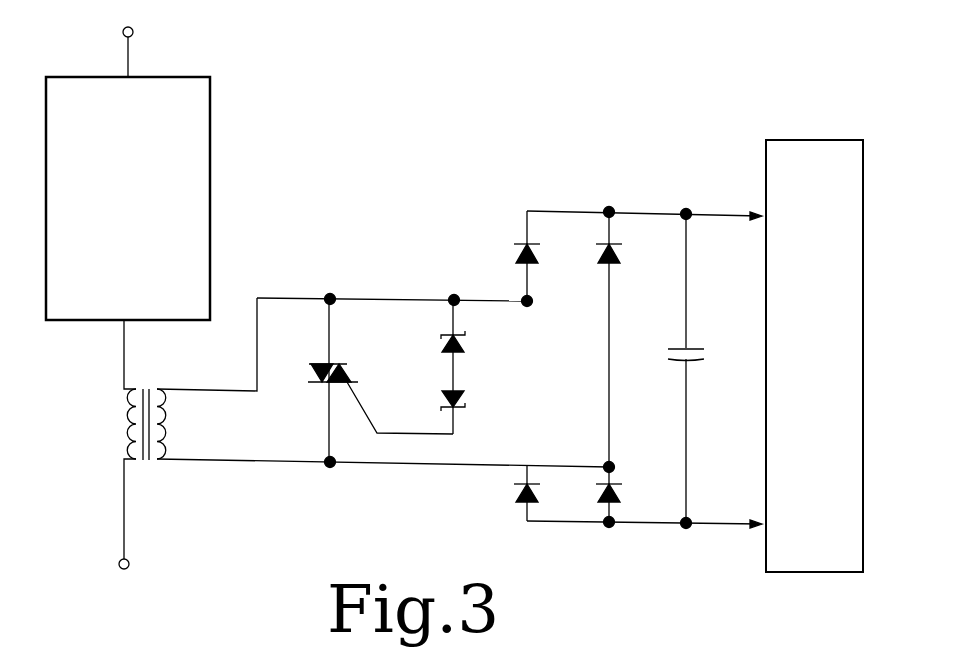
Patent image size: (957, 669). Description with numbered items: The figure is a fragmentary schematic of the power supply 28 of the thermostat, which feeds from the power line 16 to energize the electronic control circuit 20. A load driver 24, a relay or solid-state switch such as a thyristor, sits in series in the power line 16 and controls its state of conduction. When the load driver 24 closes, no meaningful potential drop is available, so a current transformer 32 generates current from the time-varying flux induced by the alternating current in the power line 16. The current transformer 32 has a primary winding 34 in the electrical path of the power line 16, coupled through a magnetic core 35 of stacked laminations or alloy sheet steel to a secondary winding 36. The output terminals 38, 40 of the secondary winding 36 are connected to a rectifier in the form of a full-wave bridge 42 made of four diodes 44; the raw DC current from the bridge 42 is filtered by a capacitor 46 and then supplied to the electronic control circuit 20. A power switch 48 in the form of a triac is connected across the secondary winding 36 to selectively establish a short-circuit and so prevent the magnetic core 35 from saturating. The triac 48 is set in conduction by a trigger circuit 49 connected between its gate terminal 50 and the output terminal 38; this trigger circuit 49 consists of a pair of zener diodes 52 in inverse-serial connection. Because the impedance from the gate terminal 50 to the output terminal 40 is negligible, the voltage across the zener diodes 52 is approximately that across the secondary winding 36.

The power line 16 is at (121, 343).
The electronic control circuit 20 is at (814, 356).
The load driver 24 is at (204, 78).
The power supply 28 is at (444, 162).
The current transformer 32 is at (150, 447).
The primary winding 34 is at (132, 437).
The magnetic core 35 is at (147, 389).
The secondary winding 36 is at (160, 394).
The output terminal 38 is at (385, 299).
The output terminal 40 is at (375, 467).
The full-wave bridge 42 is at (604, 326).
The diode 44 is at (526, 250).
The capacitor 46 is at (690, 350).
The power switch 48 is at (311, 365).
The trigger circuit 49 is at (438, 367).
The gate terminal 50 is at (418, 434).
The zener diode 52 is at (438, 333).